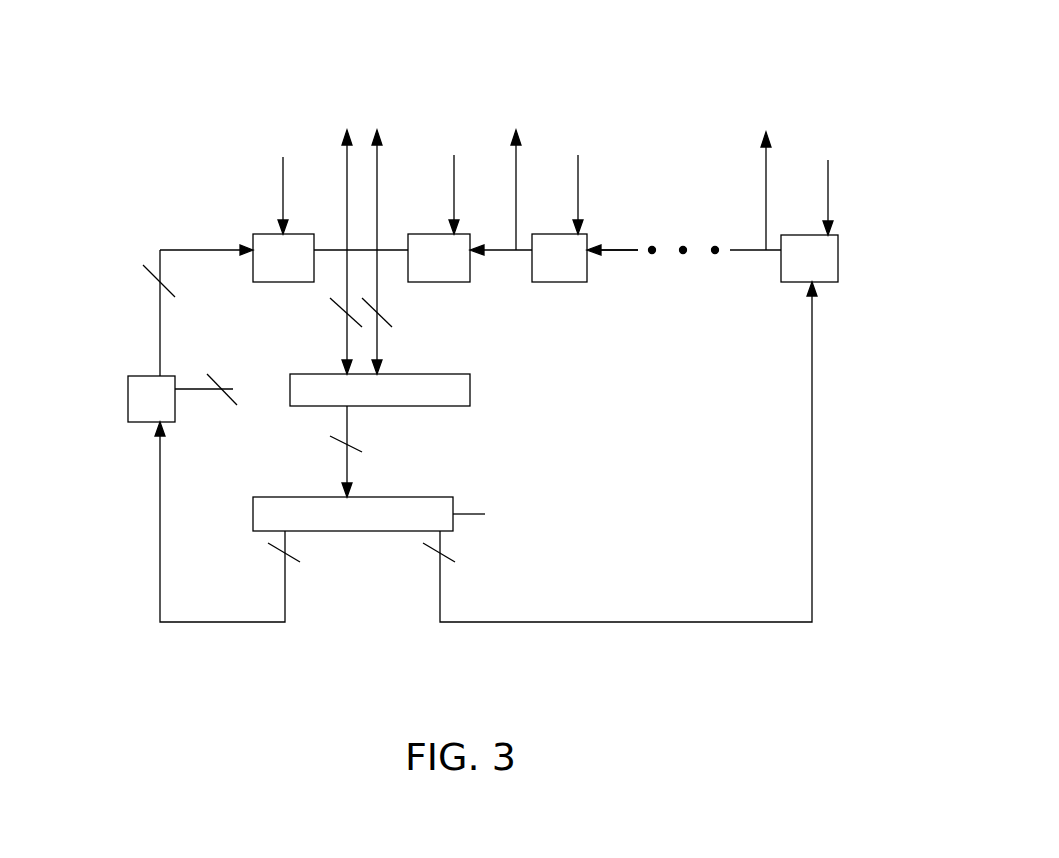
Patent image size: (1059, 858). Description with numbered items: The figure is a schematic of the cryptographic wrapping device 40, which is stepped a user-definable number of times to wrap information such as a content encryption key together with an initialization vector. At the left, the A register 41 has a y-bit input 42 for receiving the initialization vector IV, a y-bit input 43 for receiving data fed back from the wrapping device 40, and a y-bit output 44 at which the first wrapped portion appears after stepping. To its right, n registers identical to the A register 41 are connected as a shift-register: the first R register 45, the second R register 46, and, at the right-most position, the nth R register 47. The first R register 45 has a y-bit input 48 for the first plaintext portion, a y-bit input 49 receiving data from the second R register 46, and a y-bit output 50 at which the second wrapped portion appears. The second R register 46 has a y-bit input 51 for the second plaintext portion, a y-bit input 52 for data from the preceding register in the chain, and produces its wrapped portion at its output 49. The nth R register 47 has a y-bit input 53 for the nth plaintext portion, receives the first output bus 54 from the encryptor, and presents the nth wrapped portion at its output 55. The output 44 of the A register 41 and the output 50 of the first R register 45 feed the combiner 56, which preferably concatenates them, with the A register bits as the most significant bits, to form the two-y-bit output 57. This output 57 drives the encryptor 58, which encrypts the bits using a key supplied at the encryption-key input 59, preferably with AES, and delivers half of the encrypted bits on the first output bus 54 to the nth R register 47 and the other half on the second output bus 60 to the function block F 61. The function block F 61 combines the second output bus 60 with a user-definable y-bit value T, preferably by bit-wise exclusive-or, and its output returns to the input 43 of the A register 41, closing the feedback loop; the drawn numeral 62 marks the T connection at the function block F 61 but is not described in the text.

The wrapping device 40 is at (690, 54).
The A register 41 is at (268, 234).
The y-bit input 42 is at (283, 170).
The y-bit input 43 is at (207, 250).
The y-bit output 44 is at (347, 188).
The R1 register 45 is at (423, 234).
The R2 register 46 is at (547, 234).
The Rn register 47 is at (797, 235).
The y-bit input 48 is at (454, 170).
The y-bit input 49 is at (516, 203).
The y-bit output 50 is at (377, 172).
The y-bit input 51 is at (578, 170).
The y-bit input 52 is at (625, 250).
The y-bit input 53 is at (828, 187).
The first output bus 54 is at (812, 327).
The output 55 is at (766, 172).
The combiner 56 is at (470, 383).
The output 57 is at (347, 467).
The encryptor 58 is at (253, 514).
The encryption-key input 59 is at (472, 514).
The second output bus 60 is at (285, 577).
The function block F 61 is at (138, 376).
The output T of function F 62 is at (190, 389).